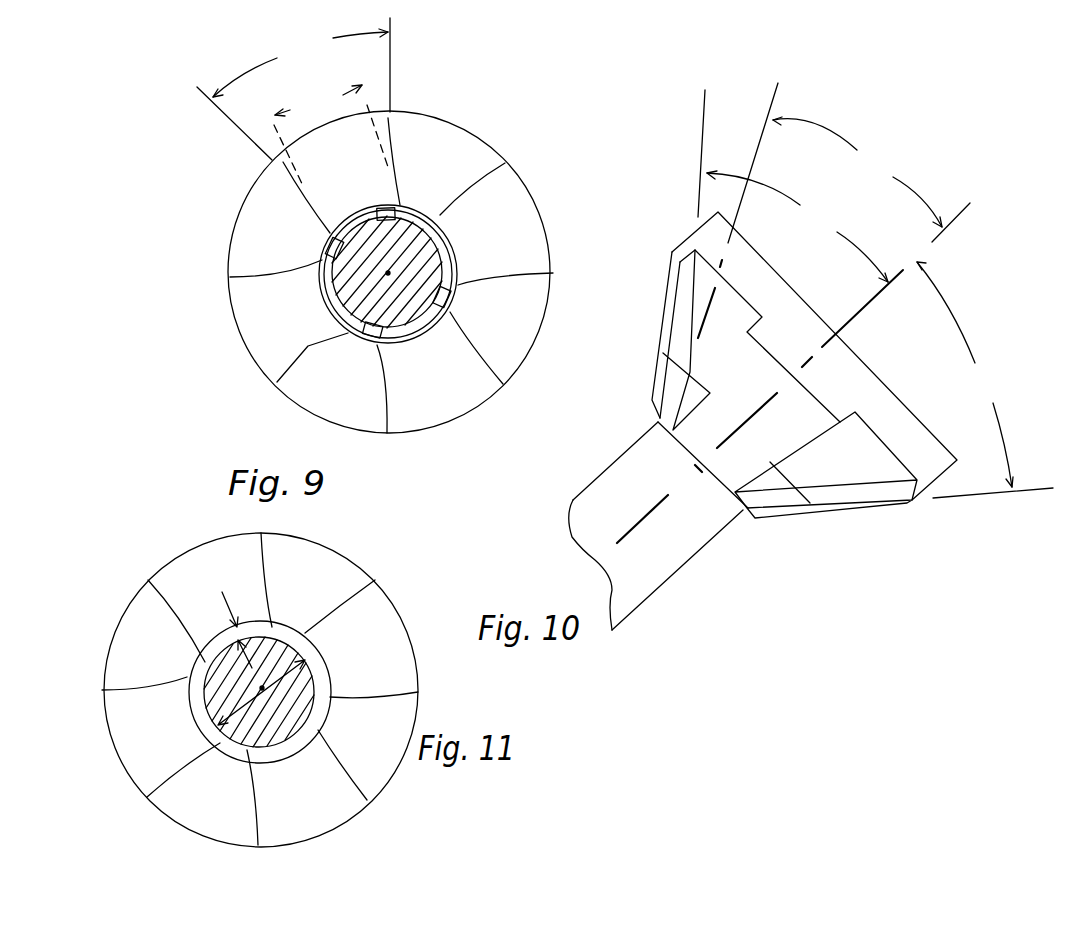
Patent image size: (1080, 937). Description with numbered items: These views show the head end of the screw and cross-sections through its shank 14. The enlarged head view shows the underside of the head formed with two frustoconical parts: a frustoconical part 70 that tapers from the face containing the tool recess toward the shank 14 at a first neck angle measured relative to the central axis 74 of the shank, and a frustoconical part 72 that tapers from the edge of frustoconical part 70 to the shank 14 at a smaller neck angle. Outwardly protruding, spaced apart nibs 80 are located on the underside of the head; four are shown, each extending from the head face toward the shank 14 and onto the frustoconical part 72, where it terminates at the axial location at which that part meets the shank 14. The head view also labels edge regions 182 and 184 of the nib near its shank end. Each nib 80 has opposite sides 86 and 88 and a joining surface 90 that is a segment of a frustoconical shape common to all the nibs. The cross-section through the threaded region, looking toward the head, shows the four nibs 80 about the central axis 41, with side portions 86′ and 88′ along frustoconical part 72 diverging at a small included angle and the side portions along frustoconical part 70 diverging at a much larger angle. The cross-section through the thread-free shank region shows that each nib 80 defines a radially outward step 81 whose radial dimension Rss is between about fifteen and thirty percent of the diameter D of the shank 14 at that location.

In FIG. 9, the shank 14 is at (388, 274).
In FIG. 10, the shank 14 is at (600, 497).
In FIG. 11, the shank 14 is at (295, 735).
In FIG. 11, the central axis 41 is at (262, 689).
In FIG. 10, the frustoconical part 70 is at (857, 460).
In FIG. 10, the frustoconical part 72 is at (765, 477).
In FIG. 10, the central axis 74 is at (658, 515).
In FIG. 9, the nib 80 is at (372, 180).
In FIG. 11, the radially outward step 81 is at (253, 632).
In FIG. 10, the side 86 is at (727, 362).
In FIG. 9, the side 86′ is at (323, 222).
In FIG. 10, the side 88 is at (805, 438).
In FIG. 9, the side 88′ is at (398, 197).
In FIG. 10, the joining surface 90 is at (798, 410).
In FIG. 10, the vane root corner 182 is at (680, 250).
In FIG. 10, the vane root flange 184 is at (657, 417).
In FIG. 11, the diameter D is at (280, 682).
In FIG. 11, the radial dimension Rss is at (228, 612).